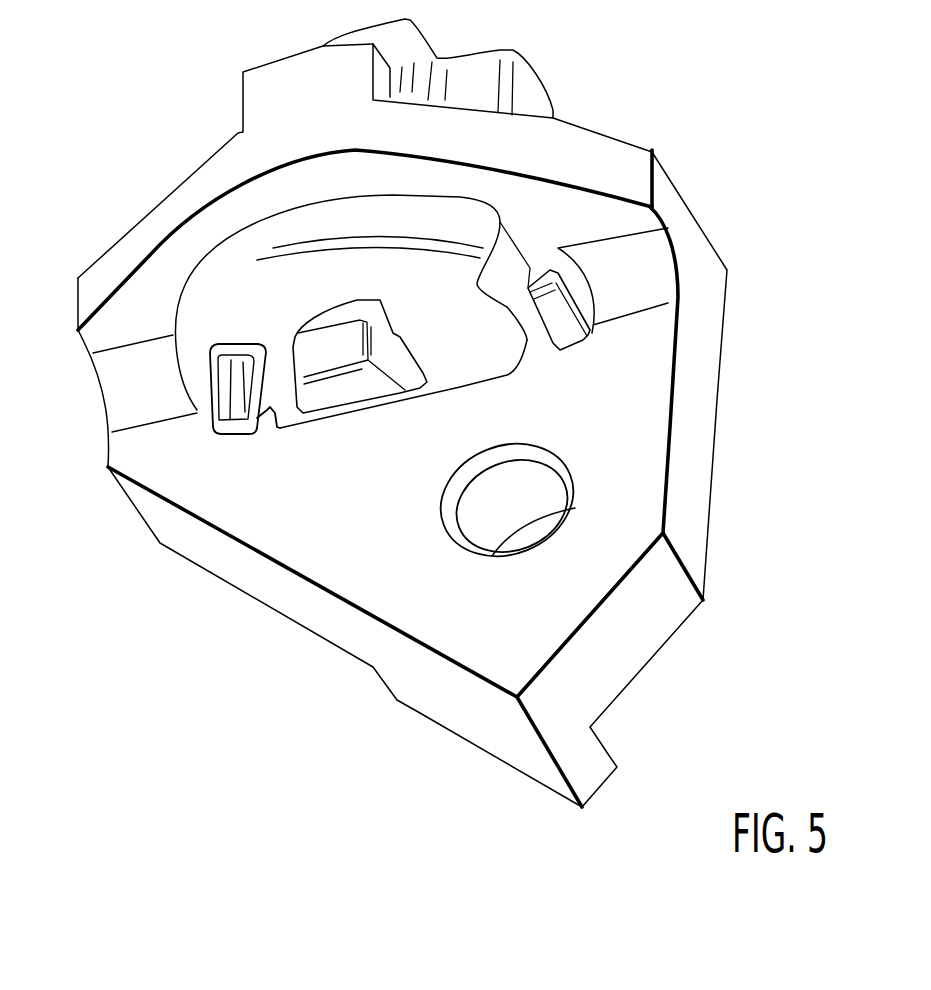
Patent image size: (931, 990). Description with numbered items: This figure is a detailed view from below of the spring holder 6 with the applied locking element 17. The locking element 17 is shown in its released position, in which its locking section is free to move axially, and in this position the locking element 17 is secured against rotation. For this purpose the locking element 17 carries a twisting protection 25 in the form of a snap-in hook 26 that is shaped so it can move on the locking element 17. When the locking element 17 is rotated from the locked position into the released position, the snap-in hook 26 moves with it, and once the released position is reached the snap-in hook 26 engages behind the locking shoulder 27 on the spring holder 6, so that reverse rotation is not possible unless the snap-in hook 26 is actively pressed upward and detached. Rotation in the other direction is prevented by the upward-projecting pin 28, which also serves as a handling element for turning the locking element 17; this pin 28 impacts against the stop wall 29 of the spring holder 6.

The spring holder 6 is at (692, 542).
The locking element 17 is at (248, 247).
The twisting protection 25 is at (595, 297).
The snap-in hook 26 is at (572, 333).
The locking shoulder 27 is at (521, 358).
The pin 28 is at (227, 383).
The stop wall 29 is at (257, 440).